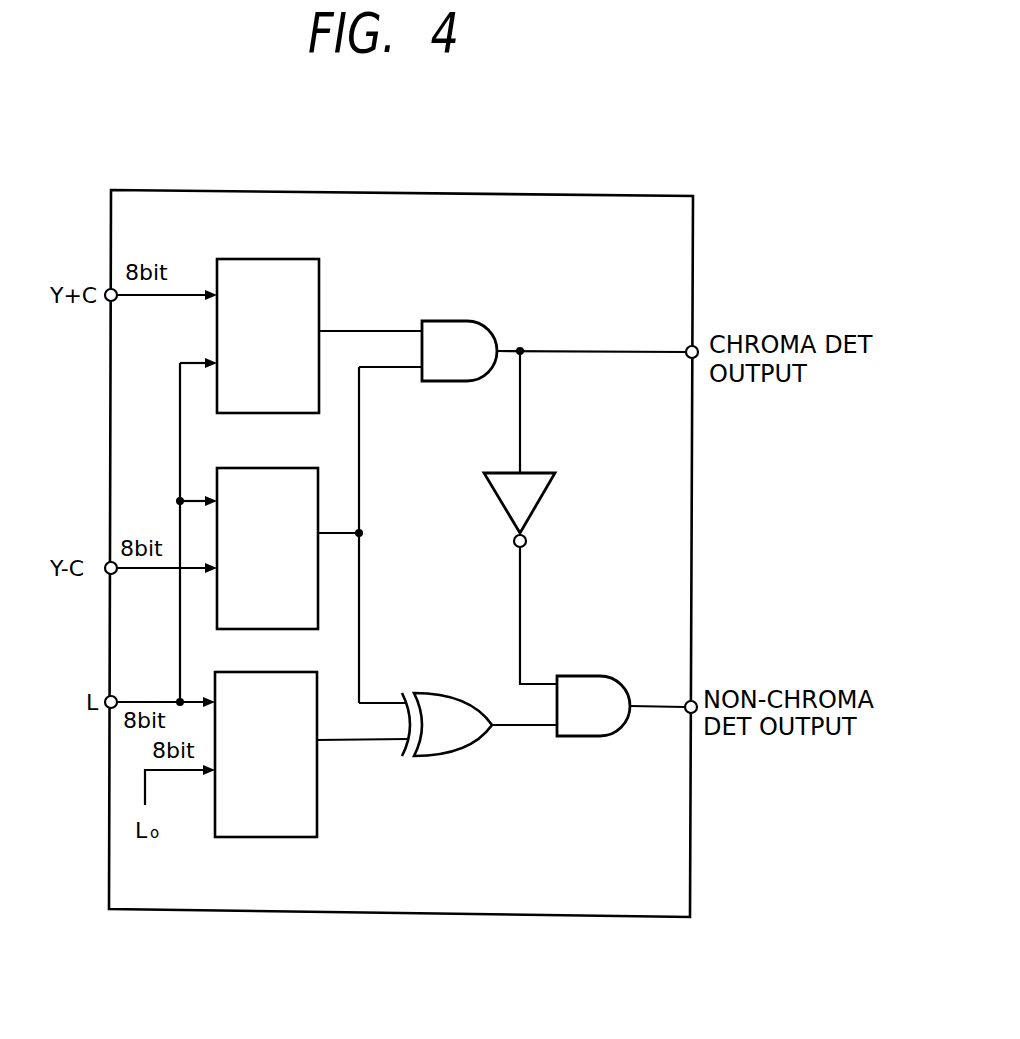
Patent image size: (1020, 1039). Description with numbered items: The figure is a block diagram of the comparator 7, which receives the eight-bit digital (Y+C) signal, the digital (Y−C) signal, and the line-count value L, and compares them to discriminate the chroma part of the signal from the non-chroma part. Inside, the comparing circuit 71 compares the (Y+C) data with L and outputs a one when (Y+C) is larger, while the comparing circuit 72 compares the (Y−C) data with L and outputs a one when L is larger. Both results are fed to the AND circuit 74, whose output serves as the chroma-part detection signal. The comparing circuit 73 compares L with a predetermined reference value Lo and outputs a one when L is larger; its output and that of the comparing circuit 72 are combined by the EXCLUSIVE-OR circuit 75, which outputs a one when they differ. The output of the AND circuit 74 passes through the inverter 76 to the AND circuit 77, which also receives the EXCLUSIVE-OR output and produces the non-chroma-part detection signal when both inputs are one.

The comparator 7 is at (601, 196).
The comparing circuit 71 is at (305, 259).
The comparing circuit 72 is at (285, 468).
The comparing circuit 73 is at (288, 672).
The AND circuit 74 is at (472, 321).
The EXCLUSIVE-OR circuit 75 is at (432, 693).
The inverter 76 is at (536, 505).
The AND circuit 77 is at (590, 676).